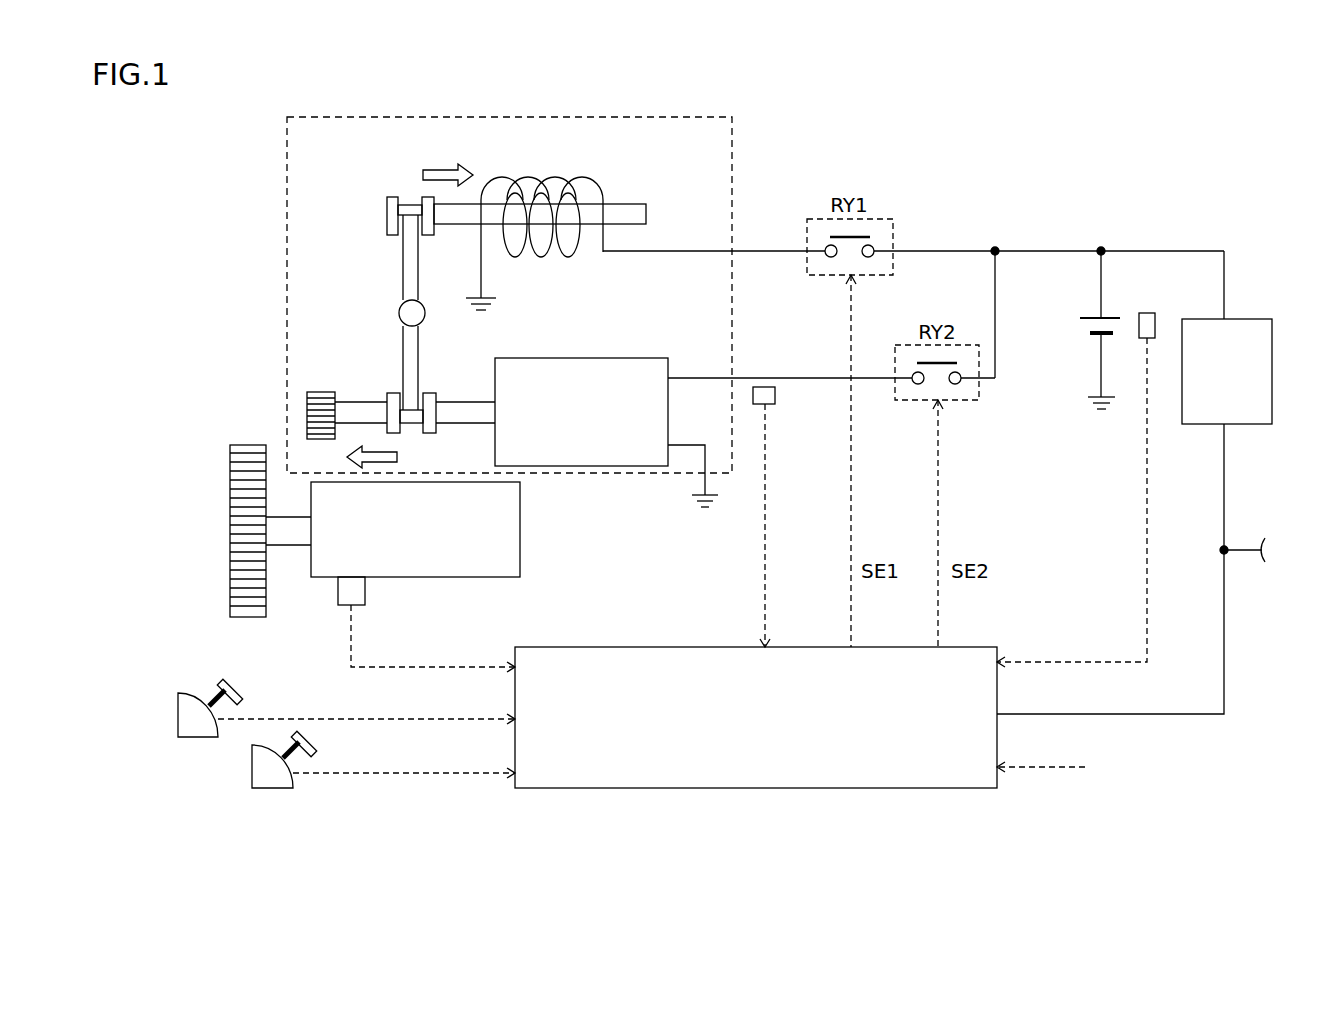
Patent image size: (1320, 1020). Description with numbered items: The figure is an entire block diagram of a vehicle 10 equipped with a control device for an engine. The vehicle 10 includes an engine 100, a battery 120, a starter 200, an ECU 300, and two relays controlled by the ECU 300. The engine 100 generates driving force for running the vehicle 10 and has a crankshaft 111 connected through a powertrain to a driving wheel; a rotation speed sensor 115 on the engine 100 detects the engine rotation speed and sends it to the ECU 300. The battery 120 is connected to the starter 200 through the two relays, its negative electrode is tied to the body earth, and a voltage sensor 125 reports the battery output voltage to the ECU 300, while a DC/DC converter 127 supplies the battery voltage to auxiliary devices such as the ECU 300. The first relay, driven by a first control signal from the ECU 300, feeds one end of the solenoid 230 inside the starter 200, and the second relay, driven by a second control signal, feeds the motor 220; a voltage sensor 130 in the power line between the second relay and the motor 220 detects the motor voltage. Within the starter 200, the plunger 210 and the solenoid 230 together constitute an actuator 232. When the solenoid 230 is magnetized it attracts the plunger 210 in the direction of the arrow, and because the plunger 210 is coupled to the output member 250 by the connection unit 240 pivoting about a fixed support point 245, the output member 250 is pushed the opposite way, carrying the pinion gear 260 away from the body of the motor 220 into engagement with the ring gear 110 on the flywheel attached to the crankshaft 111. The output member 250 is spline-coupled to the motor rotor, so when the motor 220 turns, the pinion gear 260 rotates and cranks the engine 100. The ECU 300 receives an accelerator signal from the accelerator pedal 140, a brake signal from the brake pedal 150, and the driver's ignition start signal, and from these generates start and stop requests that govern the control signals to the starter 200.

The vehicle 10 is at (930, 119).
The engine 100 is at (490, 578).
The ring gear 110 is at (266, 602).
The crankshaft 111 is at (291, 545).
The rotation speed sensor 115 is at (366, 592).
The battery 120 is at (1117, 312).
The voltage sensor 125 is at (1153, 310).
The DC/DC converter 127 is at (1250, 318).
The voltage sensor 130 is at (777, 397).
The accelerator pedal 140 is at (178, 729).
The brake pedal 150 is at (252, 781).
The starter 200 is at (663, 115).
The plunger 210 is at (630, 203).
The motor 220 is at (600, 358).
The solenoid 230 is at (545, 177).
The actuator 232 is at (558, 270).
The connection unit 240 is at (403, 272).
The fixed support point 245 is at (425, 320).
The output member 250 is at (370, 402).
The pinion gear 260 is at (320, 392).
The ECU 300 is at (930, 789).